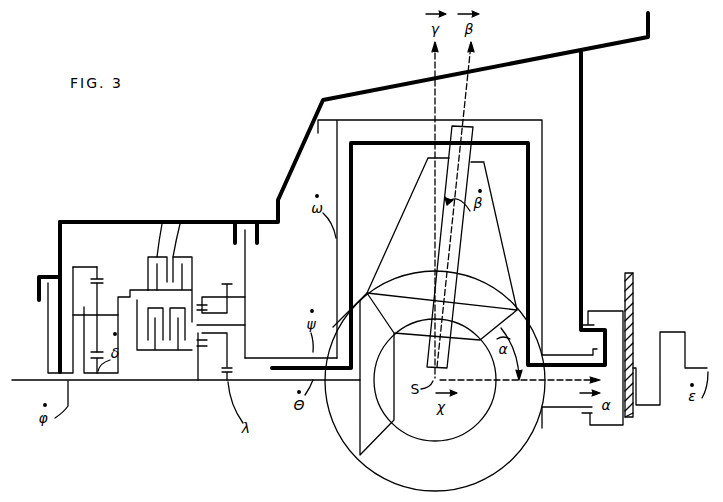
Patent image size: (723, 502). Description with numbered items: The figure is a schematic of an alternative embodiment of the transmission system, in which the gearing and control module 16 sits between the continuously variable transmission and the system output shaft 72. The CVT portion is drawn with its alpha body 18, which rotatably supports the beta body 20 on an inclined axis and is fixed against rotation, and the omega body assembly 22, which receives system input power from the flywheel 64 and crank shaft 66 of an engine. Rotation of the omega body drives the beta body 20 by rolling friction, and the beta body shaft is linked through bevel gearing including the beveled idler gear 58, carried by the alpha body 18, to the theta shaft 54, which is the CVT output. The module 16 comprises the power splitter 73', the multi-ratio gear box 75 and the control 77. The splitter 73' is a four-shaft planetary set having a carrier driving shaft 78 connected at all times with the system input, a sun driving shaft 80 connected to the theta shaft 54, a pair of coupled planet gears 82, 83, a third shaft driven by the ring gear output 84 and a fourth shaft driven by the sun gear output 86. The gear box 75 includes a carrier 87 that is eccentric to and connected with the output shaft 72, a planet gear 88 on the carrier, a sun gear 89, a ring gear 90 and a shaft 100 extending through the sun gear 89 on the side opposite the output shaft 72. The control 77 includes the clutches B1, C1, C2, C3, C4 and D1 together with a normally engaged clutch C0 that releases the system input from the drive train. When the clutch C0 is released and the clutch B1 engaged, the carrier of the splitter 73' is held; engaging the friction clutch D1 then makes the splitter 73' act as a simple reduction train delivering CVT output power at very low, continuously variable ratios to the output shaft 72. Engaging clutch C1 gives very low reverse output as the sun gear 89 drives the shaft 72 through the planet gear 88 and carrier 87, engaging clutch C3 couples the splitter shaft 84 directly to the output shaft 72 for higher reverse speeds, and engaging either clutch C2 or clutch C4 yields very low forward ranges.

The gearing and control module 16 is at (170, 222).
The alpha body 18 is at (528, 217).
The beta body 20 is at (470, 255).
The omega body assembly 22 is at (517, 118).
The theta shaft 54 is at (343, 372).
The beveled idler gear 58 is at (487, 465).
The flywheel 64 is at (629, 272).
The crank shaft 66 is at (657, 332).
The system output shaft 72 is at (40, 378).
The power splitter 73' is at (291, 322).
The multi-ratio gear box 75 is at (98, 256).
The control 77 is at (165, 352).
The carrier driving shaft 78 is at (256, 357).
The sun driving shaft 80 is at (228, 381).
The planet gear 82 is at (230, 344).
The planet gear 83 is at (202, 333).
The ring gear output shaft 84 is at (226, 296).
The sun gear output shaft 86 is at (197, 362).
The carrier 87 is at (83, 307).
The planet gear 88 is at (98, 297).
The sun gear 89 is at (93, 360).
The ring gear 90 is at (97, 277).
The shaft 100 is at (137, 382).
The normally engaged clutch C0 is at (318, 121).
The clutch C1 is at (180, 227).
The clutch C2 is at (155, 313).
The clutch C3 is at (168, 228).
The clutch C4 is at (219, 286).
The clutch B1 is at (233, 215).
The friction clutch D1 is at (52, 275).